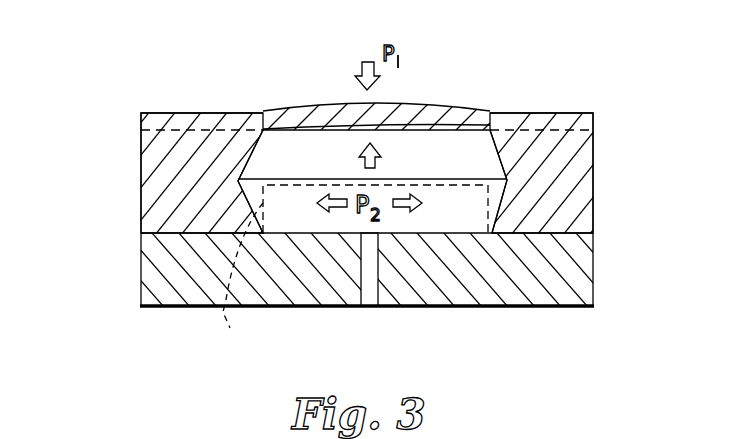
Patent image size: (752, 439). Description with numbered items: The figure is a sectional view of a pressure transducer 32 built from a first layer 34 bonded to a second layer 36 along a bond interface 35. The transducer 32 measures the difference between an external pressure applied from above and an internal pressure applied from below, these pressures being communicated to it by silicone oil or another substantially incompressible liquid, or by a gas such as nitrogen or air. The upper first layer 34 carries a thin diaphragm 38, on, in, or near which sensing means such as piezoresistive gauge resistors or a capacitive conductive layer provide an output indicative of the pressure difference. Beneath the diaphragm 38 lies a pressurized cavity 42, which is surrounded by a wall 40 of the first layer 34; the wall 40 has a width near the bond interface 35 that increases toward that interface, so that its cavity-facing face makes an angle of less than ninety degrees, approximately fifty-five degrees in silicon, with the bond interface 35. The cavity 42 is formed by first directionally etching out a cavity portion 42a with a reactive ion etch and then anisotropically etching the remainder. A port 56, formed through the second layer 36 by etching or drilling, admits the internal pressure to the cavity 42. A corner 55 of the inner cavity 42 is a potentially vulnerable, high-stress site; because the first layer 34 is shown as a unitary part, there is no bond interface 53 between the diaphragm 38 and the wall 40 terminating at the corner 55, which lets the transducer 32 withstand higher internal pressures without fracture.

The pressure transducer 32 is at (207, 61).
The first layer 34 is at (141, 153).
The bond interface 35 is at (180, 232).
The second layer 36 is at (596, 268).
The diaphragm 38 is at (460, 118).
The wall 40 is at (193, 170).
The pressurized cavity 42 is at (372, 161).
The cavity portion 42a is at (233, 281).
The bond interface 53 is at (180, 128).
The corner 55 is at (487, 130).
The port 56 is at (372, 274).